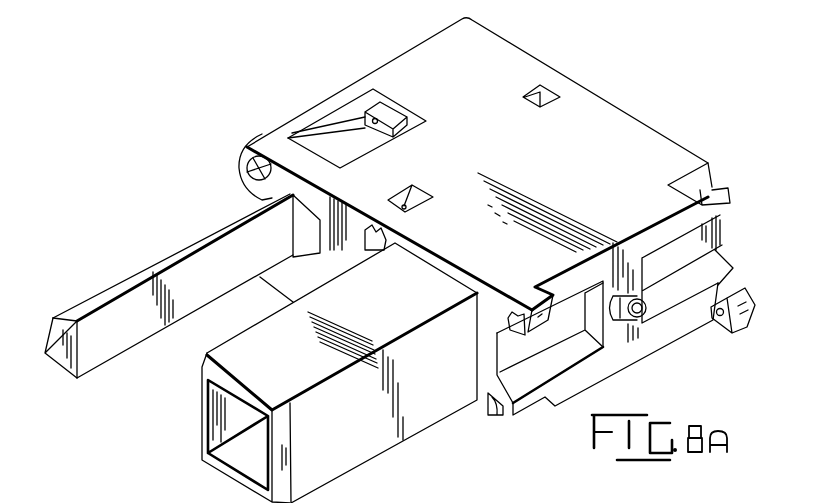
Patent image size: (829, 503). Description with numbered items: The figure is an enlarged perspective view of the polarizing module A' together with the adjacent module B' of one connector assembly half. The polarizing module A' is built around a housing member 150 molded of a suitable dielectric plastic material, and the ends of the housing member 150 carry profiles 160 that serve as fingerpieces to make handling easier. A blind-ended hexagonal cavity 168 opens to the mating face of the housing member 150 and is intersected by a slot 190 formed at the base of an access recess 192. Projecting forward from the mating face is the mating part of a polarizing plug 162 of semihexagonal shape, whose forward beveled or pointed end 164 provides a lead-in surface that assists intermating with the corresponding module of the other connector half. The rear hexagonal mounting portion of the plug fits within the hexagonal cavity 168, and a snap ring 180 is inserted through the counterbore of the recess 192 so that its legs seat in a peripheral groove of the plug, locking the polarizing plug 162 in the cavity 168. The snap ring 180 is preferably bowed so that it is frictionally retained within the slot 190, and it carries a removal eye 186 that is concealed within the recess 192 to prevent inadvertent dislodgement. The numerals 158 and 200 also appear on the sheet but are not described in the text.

The housing member 150 is at (400, 67).
The access recess 192 is at (357, 107).
The removal eye 186 is at (365, 120).
The snap ring 180 is at (400, 112).
The profile 160 is at (248, 152).
The polarizing plug 162 is at (153, 267).
The beveled end 164 is at (65, 362).
The hexagonal cavity 168 is at (310, 224).
The small opening with clip 158 is at (383, 226).
The slot 190 is at (572, 399).
The foot tab 200 is at (476, 448).
The polarizing module A' is at (536, 25).
The module B' is at (640, 80).